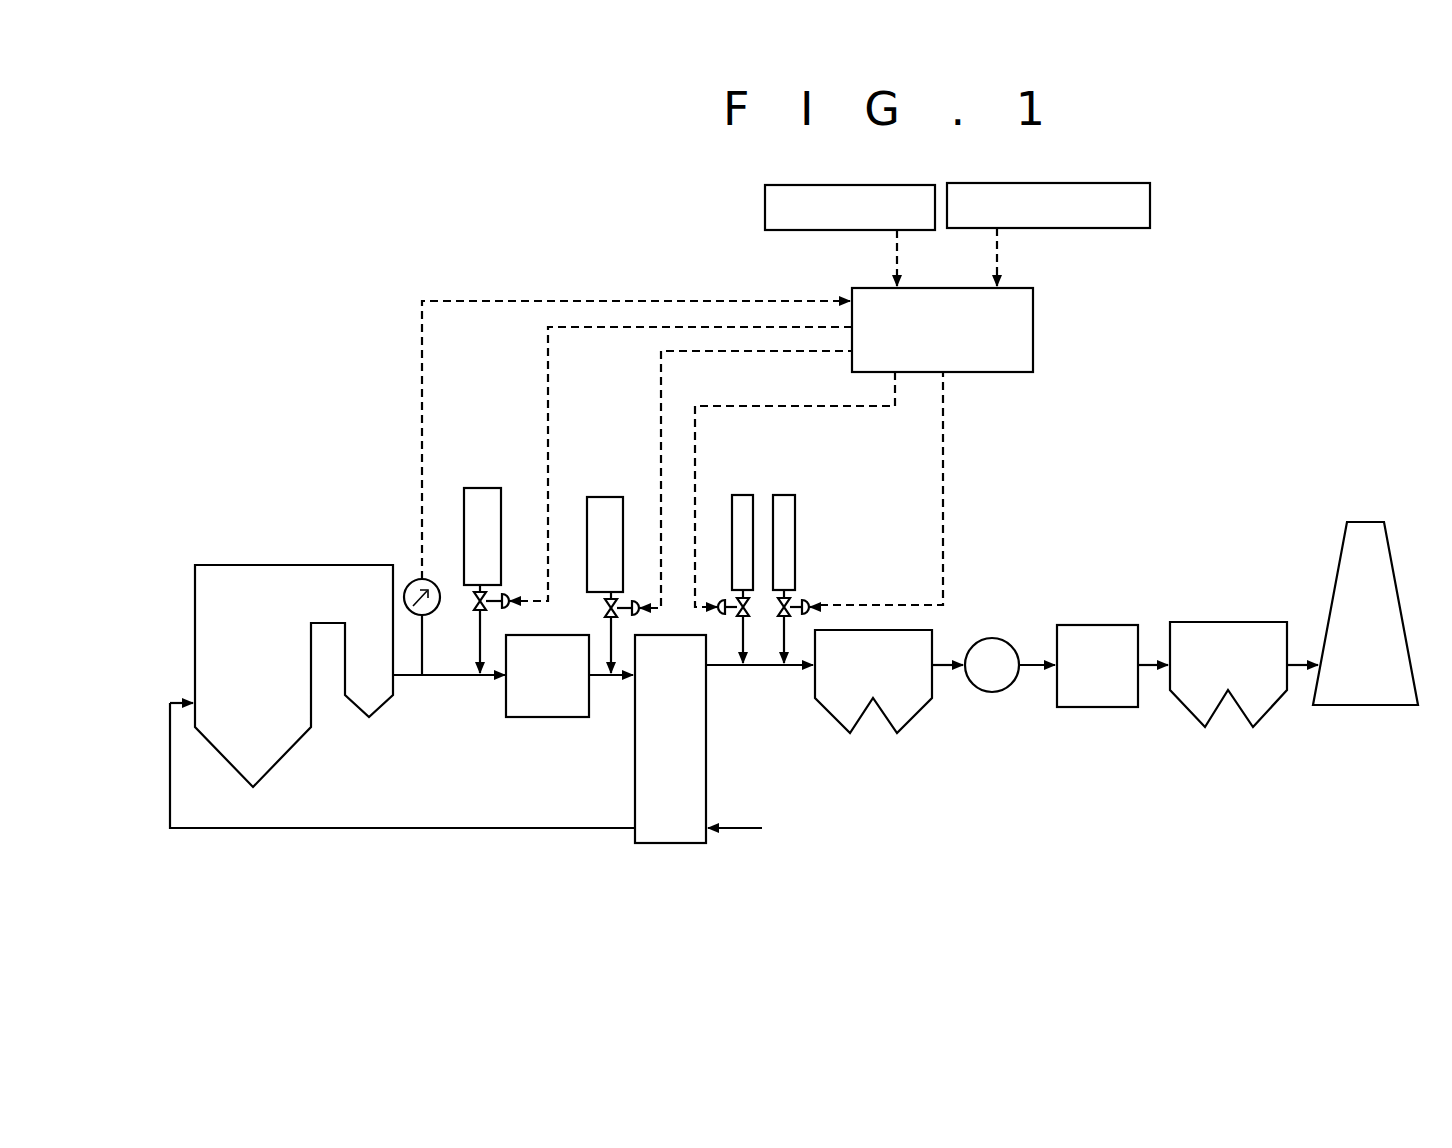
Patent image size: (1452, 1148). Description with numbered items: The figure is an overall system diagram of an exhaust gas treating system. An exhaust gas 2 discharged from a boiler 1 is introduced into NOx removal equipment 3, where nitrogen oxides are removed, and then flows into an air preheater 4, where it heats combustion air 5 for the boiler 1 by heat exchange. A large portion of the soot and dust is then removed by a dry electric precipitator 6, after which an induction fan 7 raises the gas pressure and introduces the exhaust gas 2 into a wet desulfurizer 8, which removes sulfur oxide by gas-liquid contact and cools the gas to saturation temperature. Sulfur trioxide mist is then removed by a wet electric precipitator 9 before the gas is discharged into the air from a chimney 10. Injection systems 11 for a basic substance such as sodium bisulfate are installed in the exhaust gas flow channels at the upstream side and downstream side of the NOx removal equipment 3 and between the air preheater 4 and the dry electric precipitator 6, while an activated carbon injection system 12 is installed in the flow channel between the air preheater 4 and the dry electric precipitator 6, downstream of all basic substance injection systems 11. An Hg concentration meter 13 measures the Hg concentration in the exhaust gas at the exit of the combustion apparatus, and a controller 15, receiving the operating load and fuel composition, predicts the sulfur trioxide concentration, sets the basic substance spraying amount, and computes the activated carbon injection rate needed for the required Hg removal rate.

The boiler 1 is at (232, 565).
The exhaust gas 2 is at (467, 680).
The NOx removal equipment 3 is at (570, 635).
The air preheater 4 is at (668, 843).
The combustion air 5 is at (735, 828).
The dry electric precipitator 6 is at (918, 712).
The induction fan 7 is at (998, 638).
The wet desulfurizer 8 is at (1110, 625).
The wet electric precipitator 9 is at (1215, 622).
The chimney 10 is at (1395, 572).
The basic substance injection system 11 is at (482, 488).
The activated carbon injection system 12 is at (795, 502).
The Hg concentration meter 13 is at (411, 582).
The controller 15 is at (1033, 372).